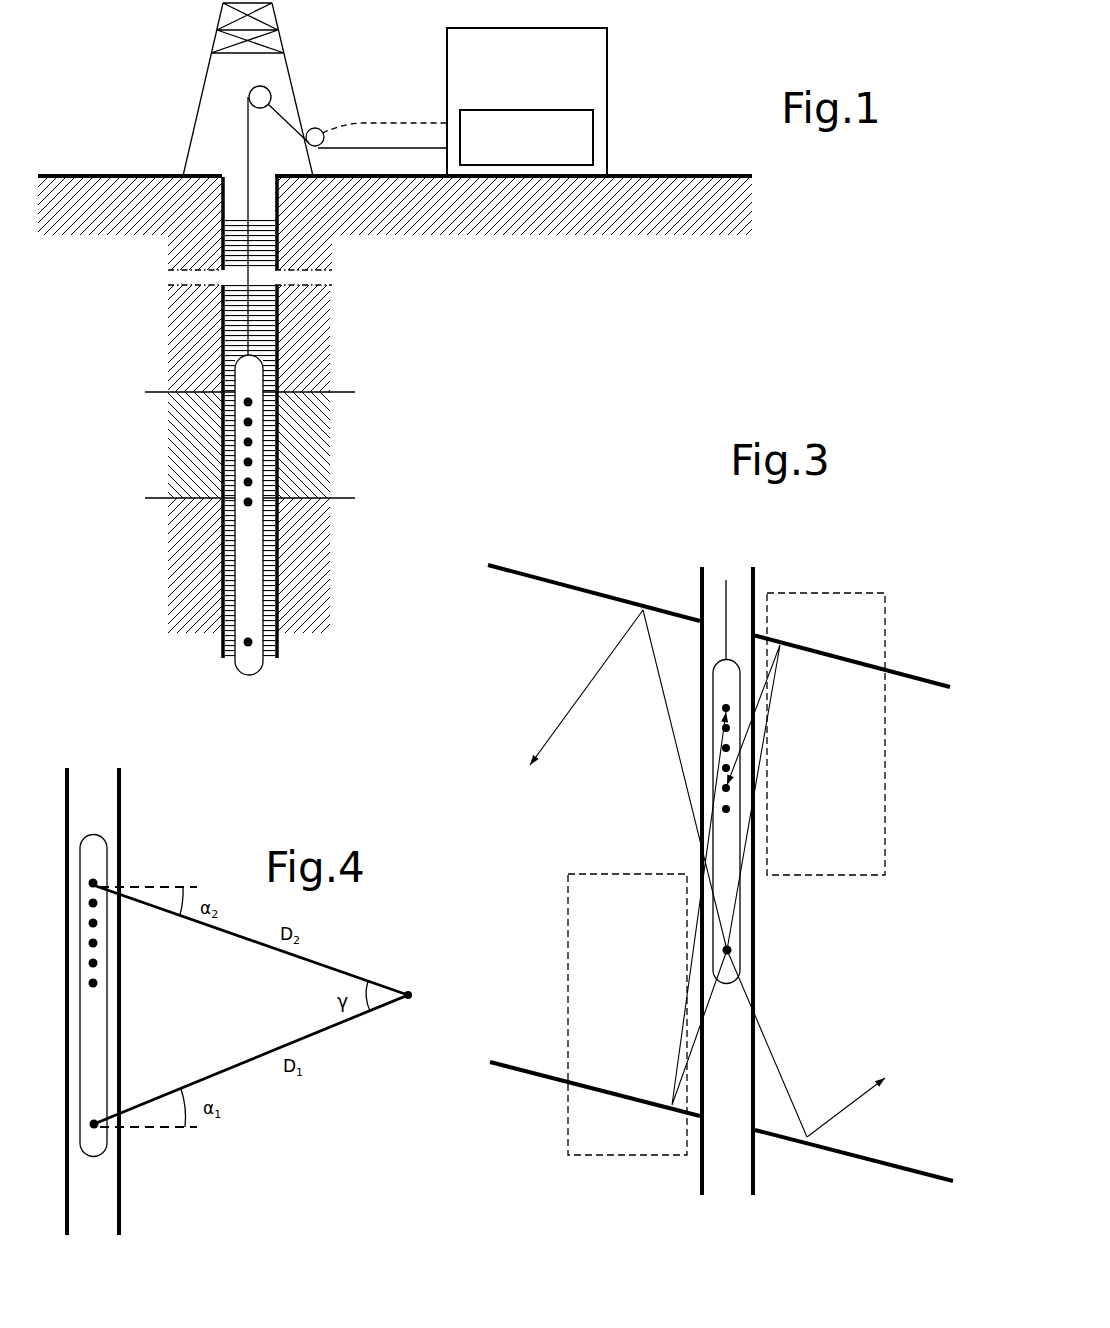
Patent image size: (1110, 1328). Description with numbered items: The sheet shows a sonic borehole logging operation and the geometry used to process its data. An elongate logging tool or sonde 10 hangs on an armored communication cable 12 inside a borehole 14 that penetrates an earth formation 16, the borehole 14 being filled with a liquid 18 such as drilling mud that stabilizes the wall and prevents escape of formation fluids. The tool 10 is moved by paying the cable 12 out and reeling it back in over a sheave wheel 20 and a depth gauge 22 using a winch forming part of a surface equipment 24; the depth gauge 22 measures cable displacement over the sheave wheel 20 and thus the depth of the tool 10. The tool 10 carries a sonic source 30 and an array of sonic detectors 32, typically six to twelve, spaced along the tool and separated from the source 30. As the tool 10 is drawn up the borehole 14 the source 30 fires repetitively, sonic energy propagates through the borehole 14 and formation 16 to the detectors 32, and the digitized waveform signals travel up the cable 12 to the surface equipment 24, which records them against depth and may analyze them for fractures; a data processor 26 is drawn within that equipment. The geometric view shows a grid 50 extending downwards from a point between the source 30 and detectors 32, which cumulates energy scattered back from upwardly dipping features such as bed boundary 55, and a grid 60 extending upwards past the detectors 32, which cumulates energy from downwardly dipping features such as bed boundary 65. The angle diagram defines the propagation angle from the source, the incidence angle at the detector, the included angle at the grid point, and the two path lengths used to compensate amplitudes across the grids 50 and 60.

In FIG. 1, the logging tool 10 is at (243, 662).
In FIG. 3, the logging tool 10 is at (711, 666).
In FIG. 4, the logging tool 10 is at (97, 857).
In FIG. 1, the armored communication cable 12 is at (245, 148).
In FIG. 1, the borehole 14 is at (223, 405).
In FIG. 3, the borehole 14 is at (755, 957).
In FIG. 1, the earth formation 16 is at (195, 607).
In FIG. 1, the liquid 18 is at (235, 338).
In FIG. 1, the sheave wheel 20 is at (258, 97).
In FIG. 1, the depth gauge 22 is at (316, 133).
In FIG. 1, the surface equipment 24 is at (608, 52).
In FIG. 1, the data processor 26 is at (594, 135).
In FIG. 1, the sonic source 30 is at (254, 642).
In FIG. 1, the sonic detectors 32 is at (252, 502).
In FIG. 3, the grid 50 is at (567, 955).
In FIG. 3, the bed boundary 55 is at (540, 1072).
In FIG. 3, the grid 60 is at (858, 593).
In FIG. 3, the bed boundary 65 is at (900, 668).